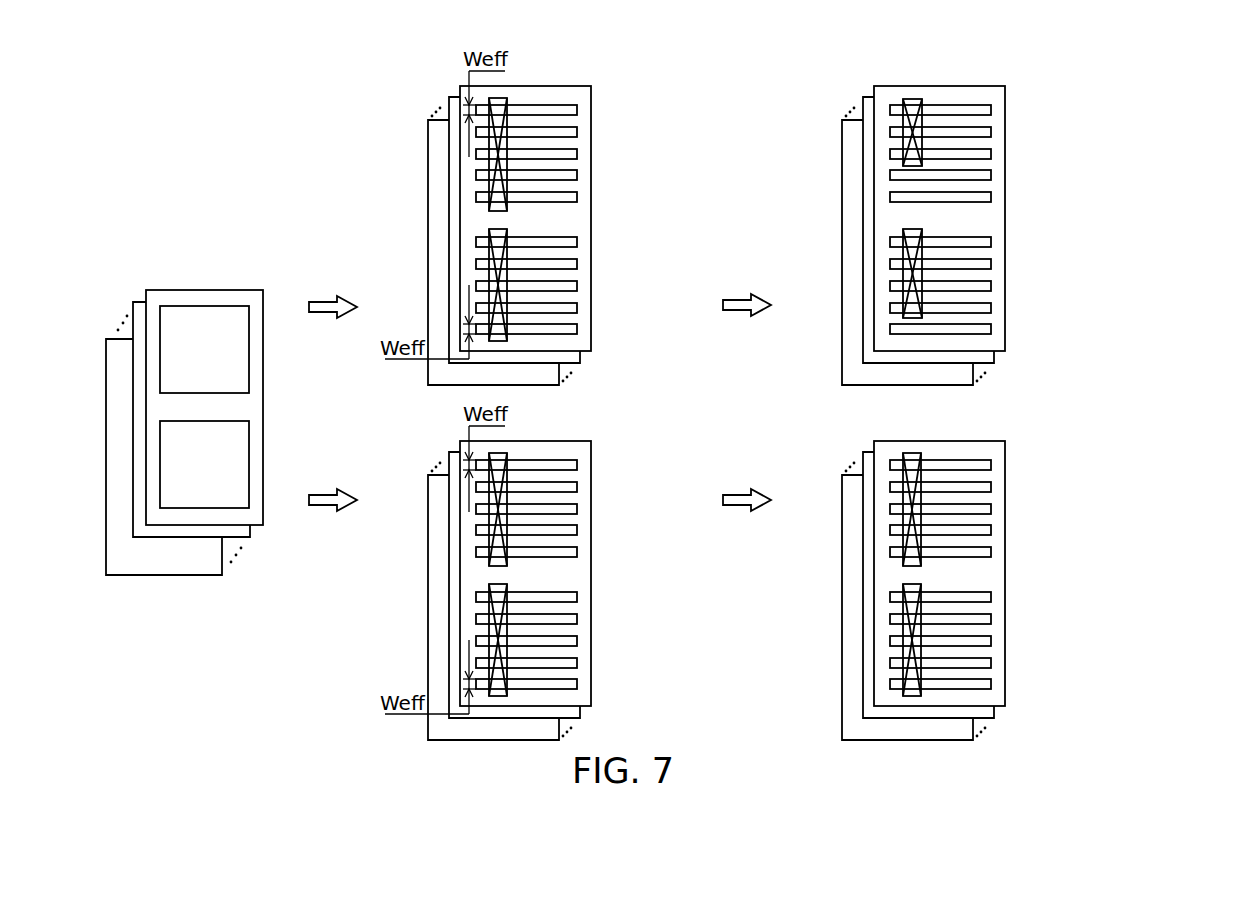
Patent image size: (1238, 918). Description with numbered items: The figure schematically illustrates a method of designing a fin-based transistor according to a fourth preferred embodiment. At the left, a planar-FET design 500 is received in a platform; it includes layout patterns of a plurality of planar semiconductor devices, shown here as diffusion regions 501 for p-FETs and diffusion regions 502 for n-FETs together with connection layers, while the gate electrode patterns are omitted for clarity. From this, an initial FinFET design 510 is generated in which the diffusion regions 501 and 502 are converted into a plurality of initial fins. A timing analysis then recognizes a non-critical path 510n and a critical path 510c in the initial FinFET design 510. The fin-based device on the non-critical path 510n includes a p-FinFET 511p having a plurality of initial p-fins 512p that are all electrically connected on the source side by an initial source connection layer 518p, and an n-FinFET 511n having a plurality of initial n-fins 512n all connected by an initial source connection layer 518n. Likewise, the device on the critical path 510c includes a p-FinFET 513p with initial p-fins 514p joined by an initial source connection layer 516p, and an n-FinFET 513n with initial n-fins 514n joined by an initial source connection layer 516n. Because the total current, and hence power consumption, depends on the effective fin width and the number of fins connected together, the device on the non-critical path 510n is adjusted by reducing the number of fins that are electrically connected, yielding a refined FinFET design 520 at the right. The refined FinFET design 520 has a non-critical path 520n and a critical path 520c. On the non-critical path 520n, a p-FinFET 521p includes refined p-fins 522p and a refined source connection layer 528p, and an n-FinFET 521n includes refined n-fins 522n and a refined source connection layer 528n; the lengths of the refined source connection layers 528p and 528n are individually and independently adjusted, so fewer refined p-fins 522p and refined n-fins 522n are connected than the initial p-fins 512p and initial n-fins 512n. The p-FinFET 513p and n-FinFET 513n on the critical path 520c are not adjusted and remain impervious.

The planar-FET design 500 is at (233, 262).
The diffusion regions for p-FETs 501 is at (226, 362).
The diffusion regions for n-FETs 502 is at (226, 477).
The initial FinFET design 510 is at (590, 45).
The non-critical path 510n is at (572, 92).
The critical path 510c is at (572, 447).
The p-FinFET 511p is at (410, 101).
The n-FinFET 511n is at (383, 311).
The initial p-fins 512p is at (577, 110).
The initial n-fins 512n is at (577, 242).
The p-FinFET 513p is at (423, 462).
The n-FinFET 513n is at (383, 666).
The initial p-fins 514p is at (769, 508).
The initial n-fins 514n is at (769, 640).
The initial source connection layer 516p is at (494, 567).
The initial source connection layer 516n is at (490, 582).
The initial source connection layer 518p is at (494, 212).
The initial source connection layer 518n is at (490, 227).
The refined FinFET design 520 is at (1058, 43).
The non-critical path 520n is at (985, 92).
The critical path 520c is at (985, 447).
The p-FinFET 521p is at (823, 101).
The n-FinFET 521n is at (817, 311).
The refined p-fins 522p is at (976, 153).
The refined n-fins 522n is at (976, 285).
The refined source connection layer 528p is at (903, 140).
The refined source connection layer 528n is at (903, 227).